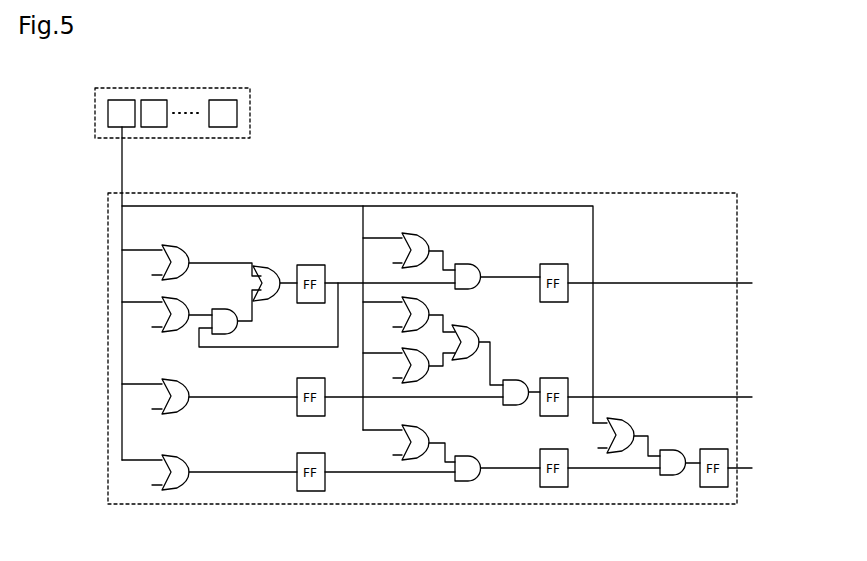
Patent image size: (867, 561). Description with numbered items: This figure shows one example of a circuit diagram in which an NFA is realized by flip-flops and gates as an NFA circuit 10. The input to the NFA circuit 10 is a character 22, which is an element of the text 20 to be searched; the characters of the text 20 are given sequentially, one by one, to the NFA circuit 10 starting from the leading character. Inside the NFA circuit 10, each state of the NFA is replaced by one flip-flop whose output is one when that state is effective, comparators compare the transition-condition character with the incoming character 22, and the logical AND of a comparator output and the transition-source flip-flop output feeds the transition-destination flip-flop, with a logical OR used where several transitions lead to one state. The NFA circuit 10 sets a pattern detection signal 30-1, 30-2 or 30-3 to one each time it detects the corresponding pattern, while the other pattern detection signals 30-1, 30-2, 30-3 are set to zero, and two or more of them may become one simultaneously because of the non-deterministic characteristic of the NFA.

The NFA circuit 10 is at (135, 505).
The text 20 is at (252, 116).
The character 22 is at (120, 181).
The pattern detection signal 30-1 is at (744, 282).
The pattern detection signal 30-2 is at (744, 396).
The pattern detection signal 30-3 is at (744, 467).